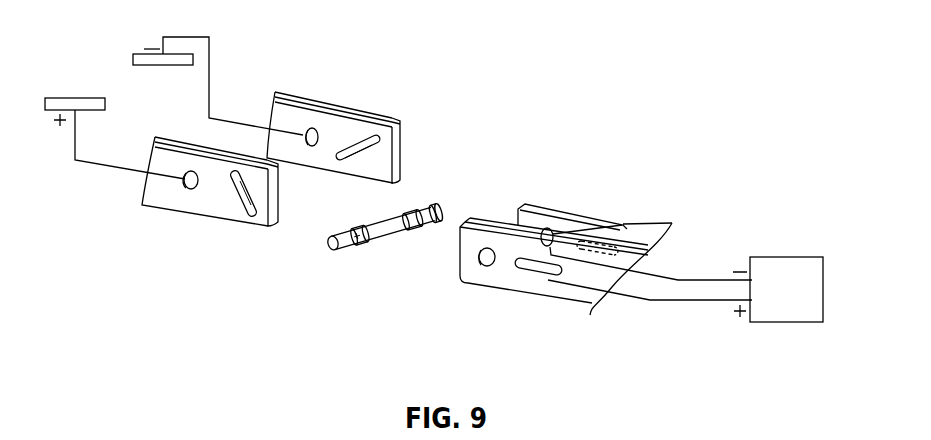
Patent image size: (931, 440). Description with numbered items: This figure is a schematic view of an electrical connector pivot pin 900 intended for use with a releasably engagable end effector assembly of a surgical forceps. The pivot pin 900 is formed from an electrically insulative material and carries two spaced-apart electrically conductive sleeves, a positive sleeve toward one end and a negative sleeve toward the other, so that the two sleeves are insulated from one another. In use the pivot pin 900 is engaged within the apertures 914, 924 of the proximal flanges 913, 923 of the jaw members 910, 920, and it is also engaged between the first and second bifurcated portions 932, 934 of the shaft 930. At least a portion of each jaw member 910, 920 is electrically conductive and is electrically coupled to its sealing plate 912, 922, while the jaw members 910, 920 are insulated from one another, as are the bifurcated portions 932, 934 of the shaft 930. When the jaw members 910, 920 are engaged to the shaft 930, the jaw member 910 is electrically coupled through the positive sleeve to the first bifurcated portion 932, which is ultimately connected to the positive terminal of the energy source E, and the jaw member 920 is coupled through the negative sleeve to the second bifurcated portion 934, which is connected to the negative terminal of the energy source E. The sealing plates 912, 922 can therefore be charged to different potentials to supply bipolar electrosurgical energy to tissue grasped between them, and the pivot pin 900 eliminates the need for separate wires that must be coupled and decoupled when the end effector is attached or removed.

The electrical connector pivot pin 900 is at (387, 220).
The jaw member 910 is at (182, 208).
The sealing plate 912 is at (90, 97).
The proximal flange 913 is at (212, 223).
The aperture 914 is at (184, 185).
The jaw member 920 is at (355, 110).
The sealing plate 922 is at (140, 52).
The proximal flange 923 is at (381, 109).
The aperture 924 is at (308, 128).
The shaft 930 is at (606, 261).
The first bifurcated portion 932 is at (520, 294).
The second bifurcated portion 934 is at (542, 220).
The energy source E is at (805, 256).